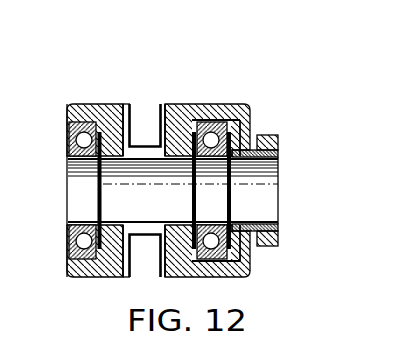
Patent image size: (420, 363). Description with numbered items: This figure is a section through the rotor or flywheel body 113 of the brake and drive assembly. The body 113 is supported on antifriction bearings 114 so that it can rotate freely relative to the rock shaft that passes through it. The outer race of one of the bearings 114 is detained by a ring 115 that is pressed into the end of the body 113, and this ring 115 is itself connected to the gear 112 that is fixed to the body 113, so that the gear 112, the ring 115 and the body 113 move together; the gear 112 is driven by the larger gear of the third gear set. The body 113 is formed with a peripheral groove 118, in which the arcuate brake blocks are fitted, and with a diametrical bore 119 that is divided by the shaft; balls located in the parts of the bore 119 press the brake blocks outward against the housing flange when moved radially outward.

The gear 112 is at (279, 138).
The rotor or flywheel body 113 is at (230, 101).
The antifriction bearings 114 is at (76, 140).
The ring 115 is at (252, 130).
The peripheral groove 118 is at (137, 125).
The diametrical bore 119 is at (165, 104).